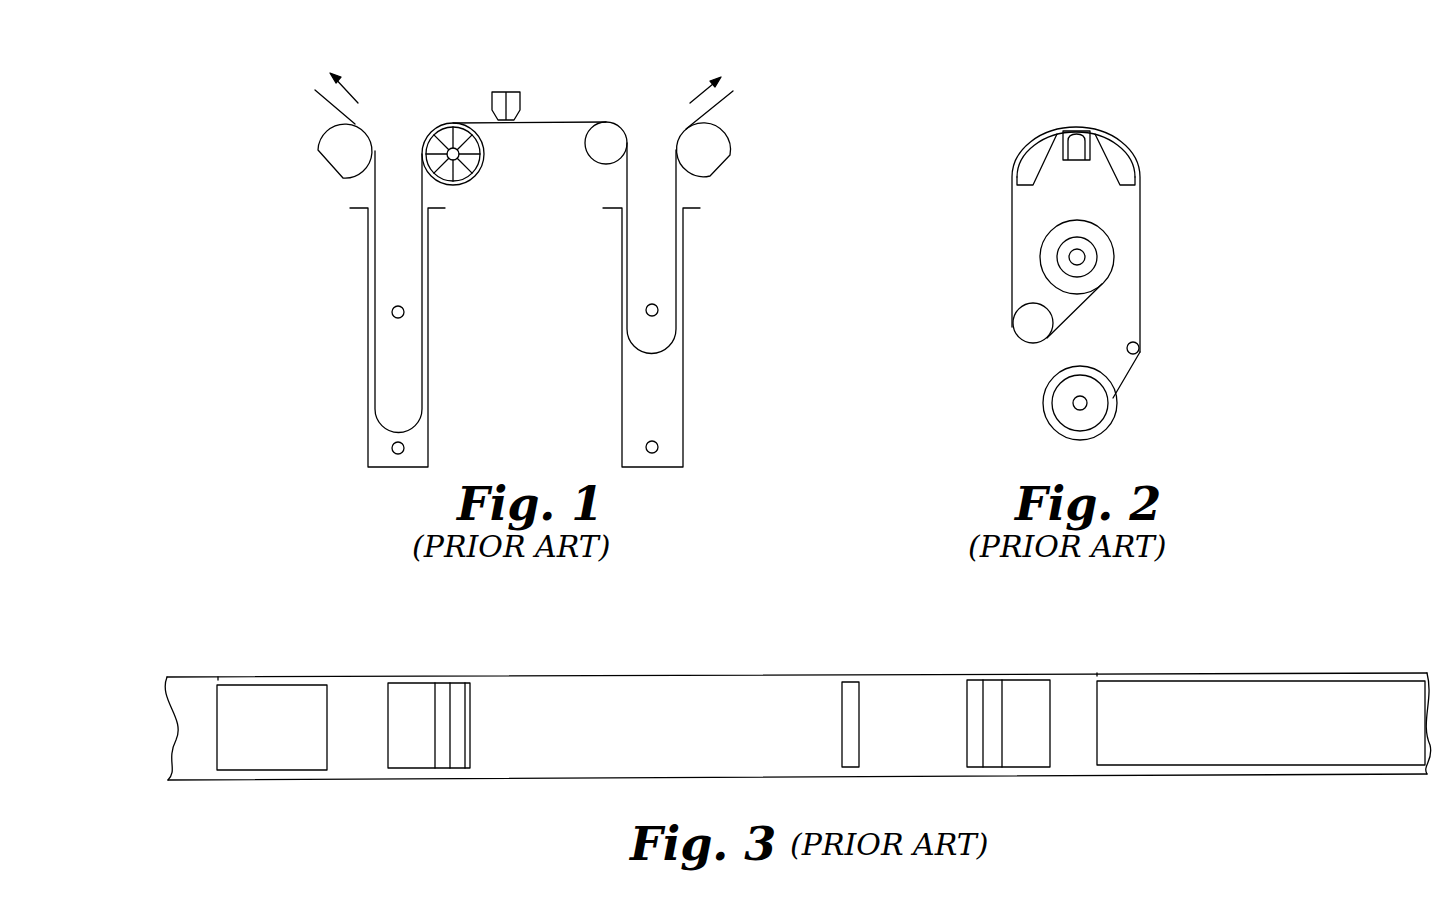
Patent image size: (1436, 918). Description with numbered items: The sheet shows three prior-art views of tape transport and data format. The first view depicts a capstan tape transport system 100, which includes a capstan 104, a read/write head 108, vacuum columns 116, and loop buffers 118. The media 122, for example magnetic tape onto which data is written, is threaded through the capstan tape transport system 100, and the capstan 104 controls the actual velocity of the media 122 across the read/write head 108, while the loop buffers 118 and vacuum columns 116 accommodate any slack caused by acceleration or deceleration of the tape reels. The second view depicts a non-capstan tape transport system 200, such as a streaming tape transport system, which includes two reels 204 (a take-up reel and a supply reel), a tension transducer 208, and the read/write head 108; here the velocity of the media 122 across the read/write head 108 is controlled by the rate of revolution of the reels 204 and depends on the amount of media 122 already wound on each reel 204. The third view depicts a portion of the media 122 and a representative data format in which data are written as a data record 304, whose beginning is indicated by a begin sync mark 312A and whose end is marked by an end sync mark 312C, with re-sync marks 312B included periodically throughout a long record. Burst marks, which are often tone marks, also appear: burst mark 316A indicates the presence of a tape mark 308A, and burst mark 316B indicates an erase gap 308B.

In FIG. 1, the capstan tape transport system 100 is at (611, 82).
In FIG. 1, the capstan 104 is at (488, 183).
In FIG. 1, the read/write head 108 is at (501, 92).
In FIG. 2, the read/write head 108 is at (1088, 120).
In FIG. 1, the vacuum columns 116 is at (622, 387).
In FIG. 1, the loop buffers 118 is at (407, 302).
In FIG. 1, the media 122 is at (724, 97).
In FIG. 2, the media 122 is at (1140, 233).
In FIG. 3, the media 122 is at (1333, 792).
In FIG. 2, the non-capstan tape transport system 200 is at (1031, 103).
In FIG. 2, the reels 204 is at (1123, 395).
In FIG. 2, the tension transducer 208 is at (1016, 344).
In FIG. 3, the data record 304 is at (664, 725).
In FIG. 3, the tape mark 308A is at (272, 727).
In FIG. 3, the erase gap 308B is at (1261, 723).
In FIG. 3, the begin sync mark 312A is at (470, 677).
In FIG. 3, the re-sync mark 312B is at (850, 676).
In FIG. 3, the end sync mark 312C is at (1002, 676).
In FIG. 3, the burst mark 316A is at (218, 677).
In FIG. 3, the burst mark 316B is at (1097, 673).